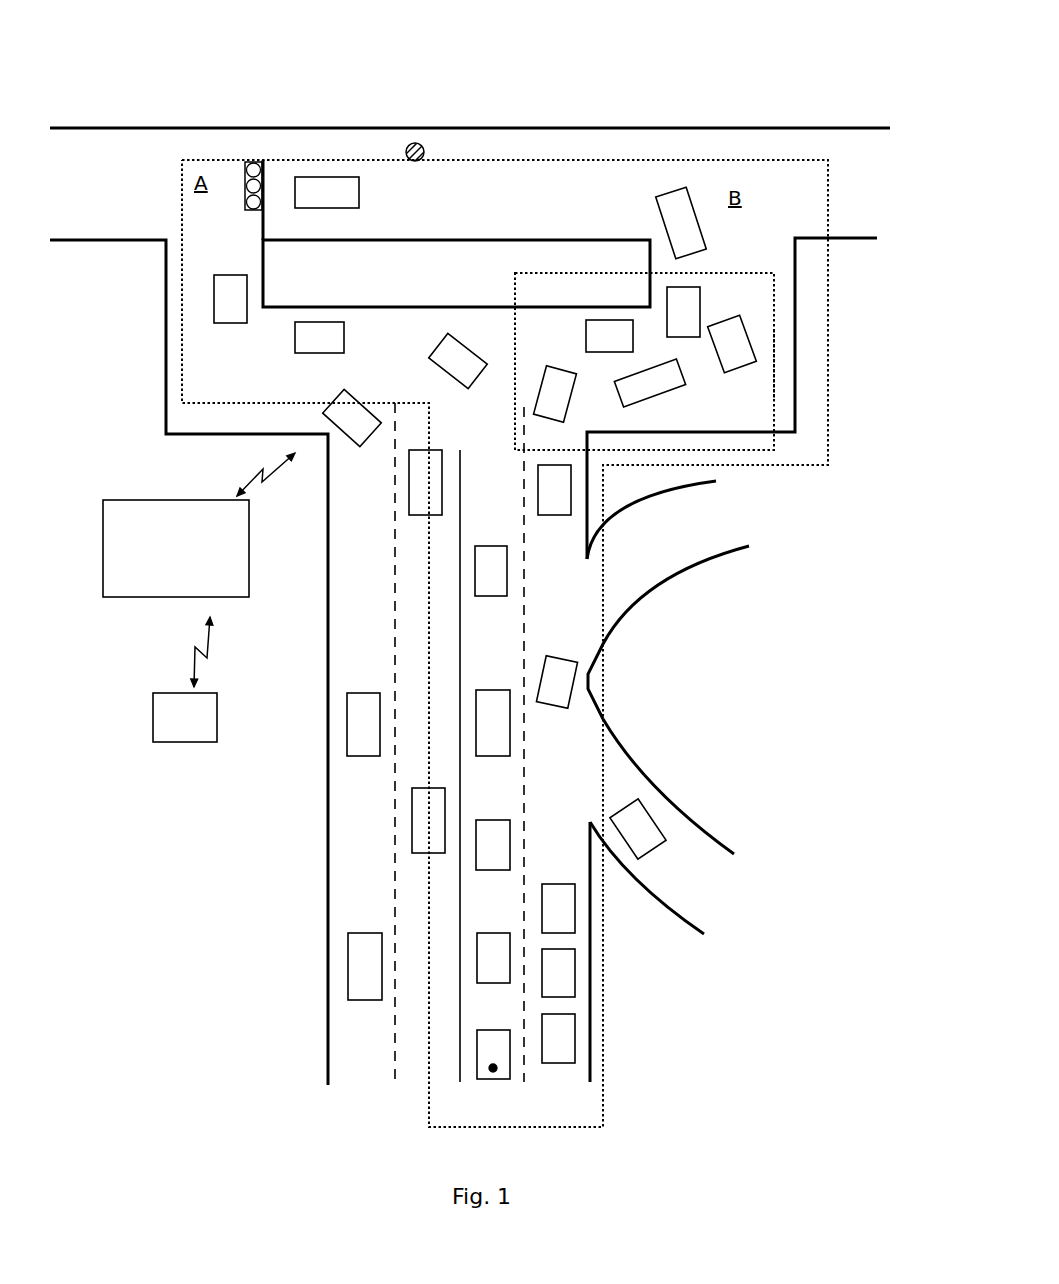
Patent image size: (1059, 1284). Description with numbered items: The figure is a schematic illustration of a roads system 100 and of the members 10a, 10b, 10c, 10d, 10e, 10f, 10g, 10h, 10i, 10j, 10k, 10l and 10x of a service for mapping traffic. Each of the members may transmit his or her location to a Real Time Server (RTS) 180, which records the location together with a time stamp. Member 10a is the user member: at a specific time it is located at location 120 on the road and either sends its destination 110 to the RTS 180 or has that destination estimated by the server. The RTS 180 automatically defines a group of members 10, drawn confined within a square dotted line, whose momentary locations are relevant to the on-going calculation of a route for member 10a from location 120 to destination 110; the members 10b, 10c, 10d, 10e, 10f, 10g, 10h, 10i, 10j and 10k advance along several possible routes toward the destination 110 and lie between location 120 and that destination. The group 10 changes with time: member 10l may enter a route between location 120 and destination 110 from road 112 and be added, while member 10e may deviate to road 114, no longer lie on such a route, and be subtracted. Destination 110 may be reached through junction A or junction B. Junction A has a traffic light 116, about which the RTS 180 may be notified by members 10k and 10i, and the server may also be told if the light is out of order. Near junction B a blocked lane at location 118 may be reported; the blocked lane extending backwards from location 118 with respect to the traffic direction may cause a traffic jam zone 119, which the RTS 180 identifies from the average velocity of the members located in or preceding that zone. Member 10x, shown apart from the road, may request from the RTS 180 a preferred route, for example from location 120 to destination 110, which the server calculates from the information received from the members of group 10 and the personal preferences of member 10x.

The roads system 100 is at (660, 48).
The destination 110 is at (412, 143).
The traffic light 116 is at (262, 163).
The location 118 is at (733, 303).
The traffic jam zone 119 is at (777, 367).
The road 114 is at (684, 579).
The road 112 is at (672, 805).
The group of members 10 is at (605, 966).
The location 120 is at (497, 1066).
The Real Time Server (RTS) 180 is at (176, 548).
The member 10a is at (493, 1054).
The member 10b is at (558, 973).
The member 10c is at (493, 958).
The member 10d is at (558, 908).
The member 10e is at (556, 682).
The member 10f is at (554, 490).
The member 10g is at (458, 360).
The member 10h is at (649, 383).
The member 10i is at (230, 299).
The member 10j is at (681, 223).
The member 10k is at (327, 192).
The member 10l is at (638, 829).
The member 10x is at (185, 717).